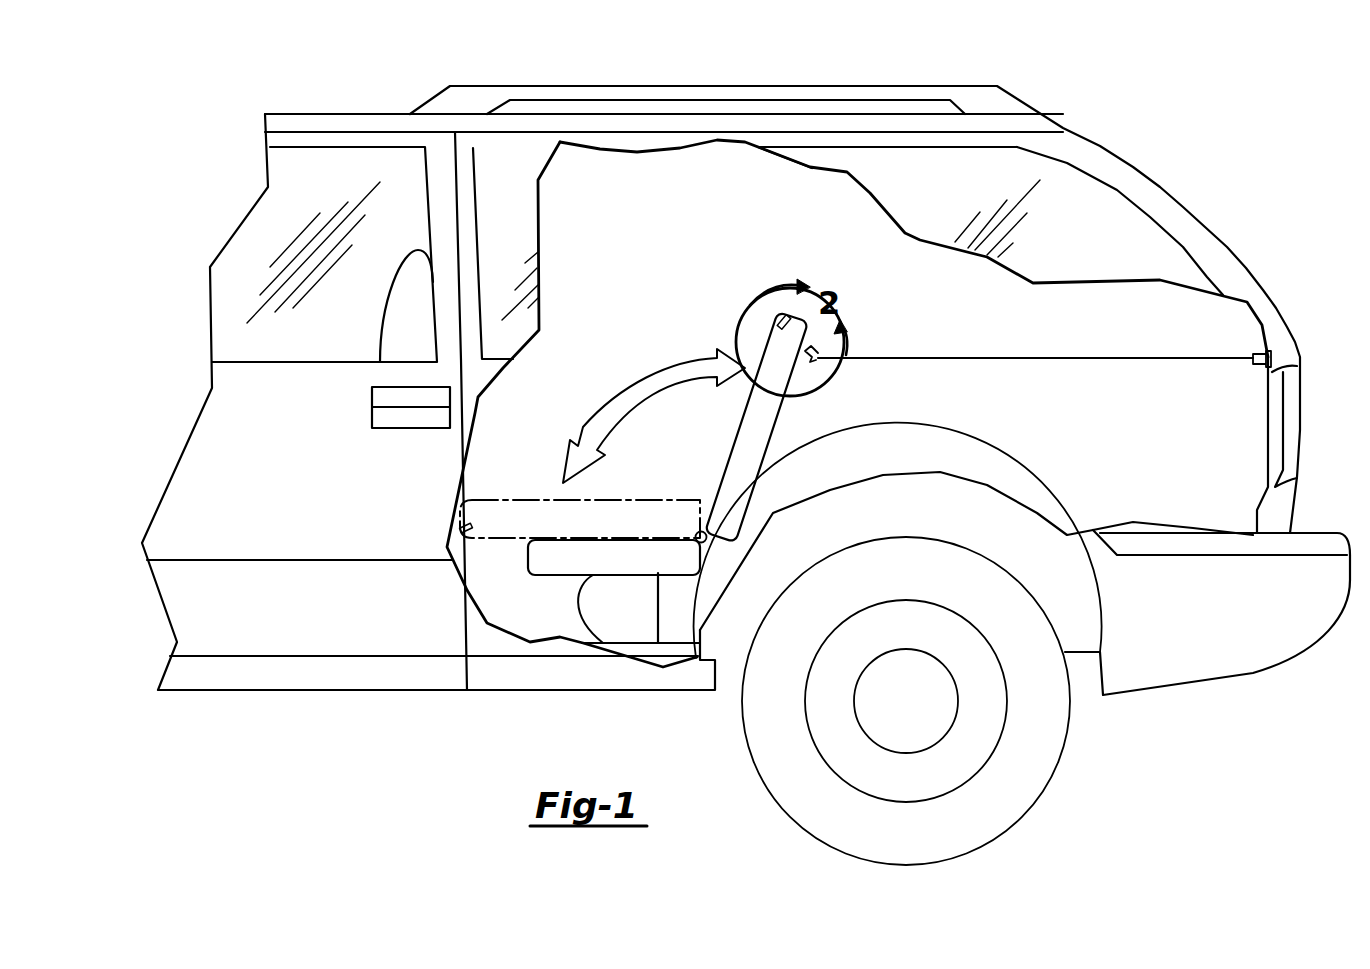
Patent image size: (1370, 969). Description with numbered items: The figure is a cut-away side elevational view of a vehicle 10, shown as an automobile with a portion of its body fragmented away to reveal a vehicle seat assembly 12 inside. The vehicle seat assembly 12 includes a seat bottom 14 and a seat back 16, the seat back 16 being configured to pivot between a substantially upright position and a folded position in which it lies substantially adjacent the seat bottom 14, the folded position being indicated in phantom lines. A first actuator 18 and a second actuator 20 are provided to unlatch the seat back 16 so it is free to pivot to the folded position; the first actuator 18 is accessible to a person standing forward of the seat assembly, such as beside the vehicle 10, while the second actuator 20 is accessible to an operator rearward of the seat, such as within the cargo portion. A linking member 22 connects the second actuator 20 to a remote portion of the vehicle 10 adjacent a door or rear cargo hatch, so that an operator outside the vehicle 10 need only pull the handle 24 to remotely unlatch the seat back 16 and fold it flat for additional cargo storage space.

The vehicle 10 is at (346, 80).
The vehicle seat assembly 12 is at (617, 380).
The seat bottom 14 is at (525, 558).
The seat back 16 is at (772, 433).
The first actuator 18 is at (778, 317).
The second actuator 20 is at (820, 357).
The linking member 22 is at (1140, 357).
The handle 24 is at (1253, 368).